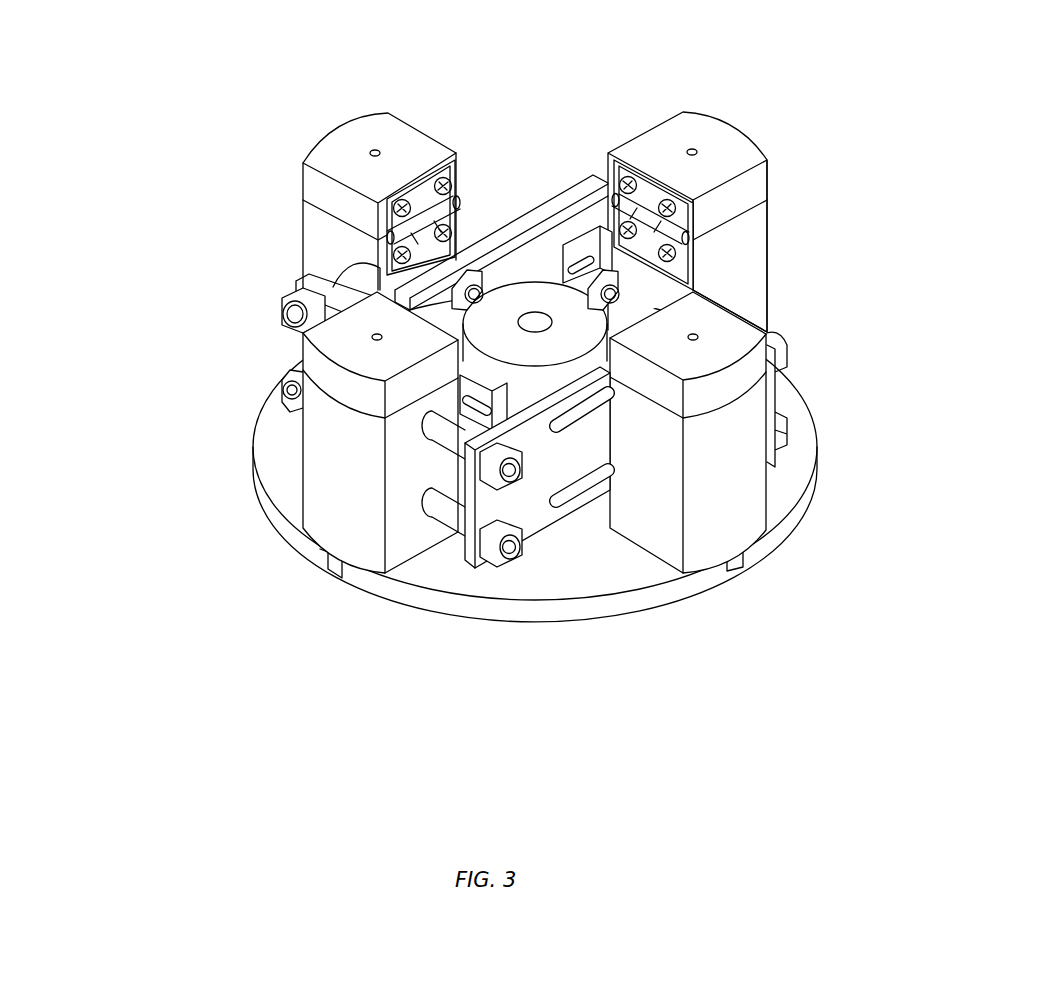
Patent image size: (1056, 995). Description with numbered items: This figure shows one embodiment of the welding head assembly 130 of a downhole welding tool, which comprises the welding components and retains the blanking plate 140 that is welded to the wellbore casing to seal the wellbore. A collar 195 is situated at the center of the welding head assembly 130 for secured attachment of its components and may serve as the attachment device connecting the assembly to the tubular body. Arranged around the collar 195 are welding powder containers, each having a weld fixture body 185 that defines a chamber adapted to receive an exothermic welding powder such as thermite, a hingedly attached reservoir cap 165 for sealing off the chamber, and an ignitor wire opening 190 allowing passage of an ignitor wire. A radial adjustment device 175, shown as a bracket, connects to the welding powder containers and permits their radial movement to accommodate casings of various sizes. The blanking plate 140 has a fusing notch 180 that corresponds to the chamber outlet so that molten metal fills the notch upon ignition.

The welding head assembly 130 is at (589, 372).
The blanking plate 140 is at (251, 522).
The reservoir cap 165 is at (779, 194).
The radial adjustment device 175 is at (556, 553).
The fusing notch 180 is at (760, 580).
The weld fixture body 185 is at (787, 262).
The ignitor wire opening 190 is at (352, 143).
The collar 195 is at (528, 288).